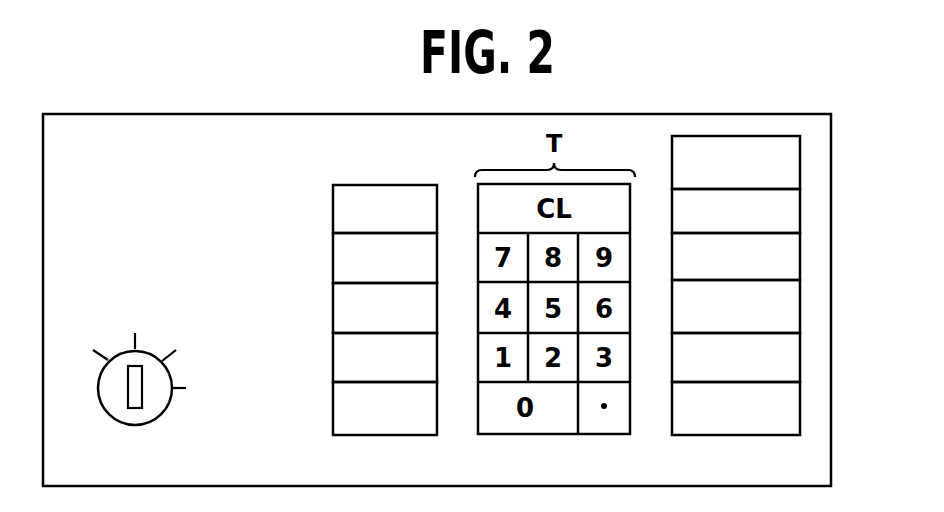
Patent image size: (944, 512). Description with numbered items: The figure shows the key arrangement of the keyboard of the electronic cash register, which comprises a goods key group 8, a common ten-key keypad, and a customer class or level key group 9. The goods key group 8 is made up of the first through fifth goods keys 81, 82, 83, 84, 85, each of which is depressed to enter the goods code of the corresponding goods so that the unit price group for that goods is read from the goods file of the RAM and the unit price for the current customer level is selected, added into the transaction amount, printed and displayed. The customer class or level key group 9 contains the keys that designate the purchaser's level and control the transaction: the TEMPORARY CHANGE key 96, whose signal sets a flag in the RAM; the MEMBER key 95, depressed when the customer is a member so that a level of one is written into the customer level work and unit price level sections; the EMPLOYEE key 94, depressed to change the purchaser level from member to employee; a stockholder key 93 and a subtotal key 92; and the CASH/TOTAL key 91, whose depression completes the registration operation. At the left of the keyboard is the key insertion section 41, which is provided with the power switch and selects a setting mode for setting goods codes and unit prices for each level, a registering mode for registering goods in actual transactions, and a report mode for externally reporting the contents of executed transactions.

The goods key group 8 is at (285, 190).
The GOODS 1 key 81 is at (344, 423).
The GOODS 2 key 82 is at (344, 375).
The GOODS 3 key 83 is at (344, 326).
The GOODS 4 key 84 is at (344, 276).
The GOODS 5 key 85 is at (344, 221).
The customer class or level key group 9 is at (886, 435).
The CASH/TOTAL key 91 is at (798, 401).
The subtotal key 92 is at (798, 354).
The stockholder key 93 is at (798, 304).
The EMPLOYEE key 94 is at (798, 254).
The MEMBER key 95 is at (798, 209).
The TEMPORARY CHANGE key 96 is at (798, 157).
The key insertion section 41 is at (167, 404).